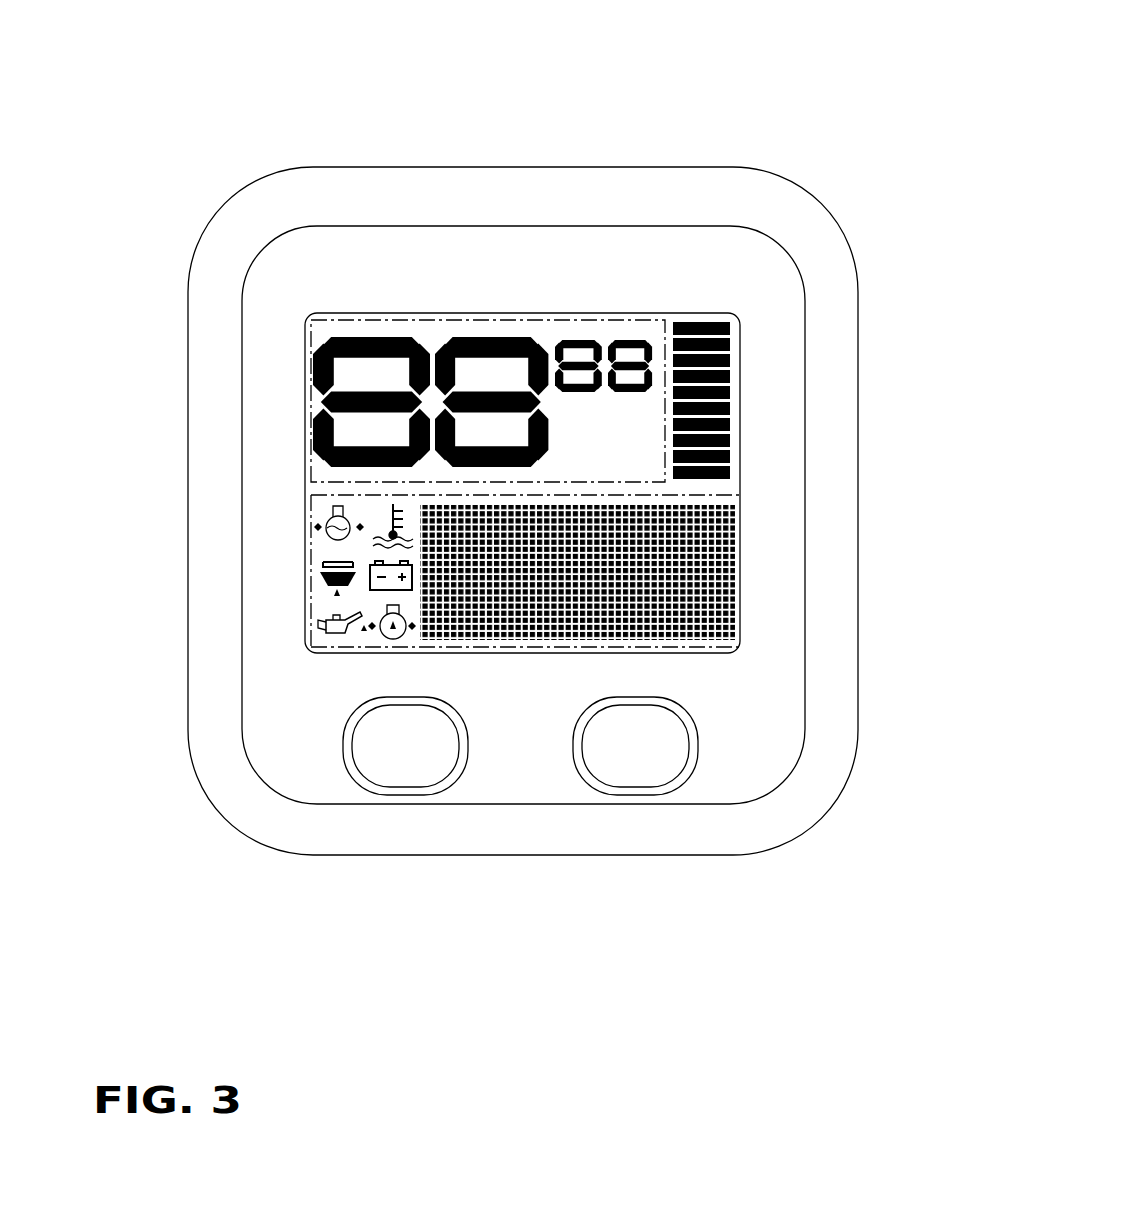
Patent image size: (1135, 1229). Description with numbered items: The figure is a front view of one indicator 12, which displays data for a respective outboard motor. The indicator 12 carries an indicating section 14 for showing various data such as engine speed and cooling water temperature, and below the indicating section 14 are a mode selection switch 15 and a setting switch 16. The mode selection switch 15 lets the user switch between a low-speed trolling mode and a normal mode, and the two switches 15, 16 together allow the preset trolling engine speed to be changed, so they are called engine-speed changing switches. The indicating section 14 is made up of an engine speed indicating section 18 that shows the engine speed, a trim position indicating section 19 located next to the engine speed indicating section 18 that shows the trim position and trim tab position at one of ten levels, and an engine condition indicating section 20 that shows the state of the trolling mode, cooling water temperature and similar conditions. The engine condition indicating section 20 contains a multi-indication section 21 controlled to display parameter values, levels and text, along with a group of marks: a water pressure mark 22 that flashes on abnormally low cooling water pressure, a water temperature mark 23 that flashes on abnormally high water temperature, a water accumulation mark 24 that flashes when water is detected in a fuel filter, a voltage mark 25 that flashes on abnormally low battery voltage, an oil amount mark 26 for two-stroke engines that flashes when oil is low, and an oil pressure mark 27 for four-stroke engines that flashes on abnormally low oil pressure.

The indicator 12 is at (640, 128).
The indicating section 14 is at (540, 312).
The mode selection switch 15 is at (632, 775).
The setting switch 16 is at (403, 772).
The engine speed indicating section 18 is at (450, 318).
The trim position indicating section 19 is at (707, 320).
The engine condition indicating section 20 is at (481, 653).
The multi-indication section 21 is at (699, 652).
The water pressure mark 22 is at (310, 513).
The water temperature mark 23 is at (382, 540).
The water accumulation mark 24 is at (312, 578).
The voltage mark 25 is at (382, 590).
The oil amount mark 26 is at (312, 622).
The oil pressure mark 27 is at (393, 639).